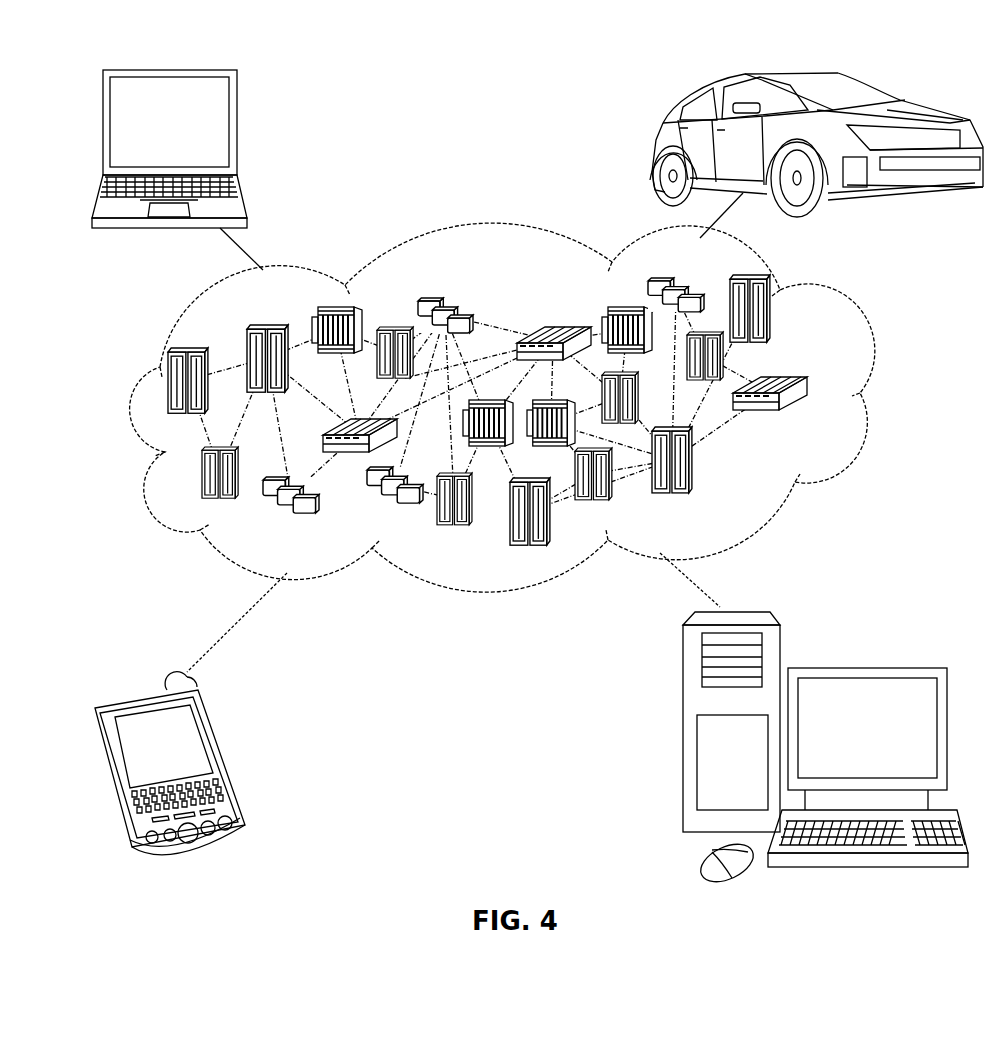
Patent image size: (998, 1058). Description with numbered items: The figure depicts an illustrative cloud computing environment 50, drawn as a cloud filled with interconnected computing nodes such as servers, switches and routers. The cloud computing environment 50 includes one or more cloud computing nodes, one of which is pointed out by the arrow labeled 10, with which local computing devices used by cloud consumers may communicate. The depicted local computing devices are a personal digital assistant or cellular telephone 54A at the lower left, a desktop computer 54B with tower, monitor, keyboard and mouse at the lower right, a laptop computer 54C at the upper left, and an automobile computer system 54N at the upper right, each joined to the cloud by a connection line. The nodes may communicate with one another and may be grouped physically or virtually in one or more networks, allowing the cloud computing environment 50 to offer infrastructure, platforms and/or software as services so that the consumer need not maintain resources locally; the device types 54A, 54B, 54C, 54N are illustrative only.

The cloud computing node 10 is at (815, 420).
The cloud computing environment 50 is at (527, 407).
The personal digital assistant (PDA) or cellular telephone 54A is at (227, 755).
The desktop computer 54B is at (863, 667).
The laptop computer 54C is at (237, 130).
The automobile computer system 54N is at (655, 145).